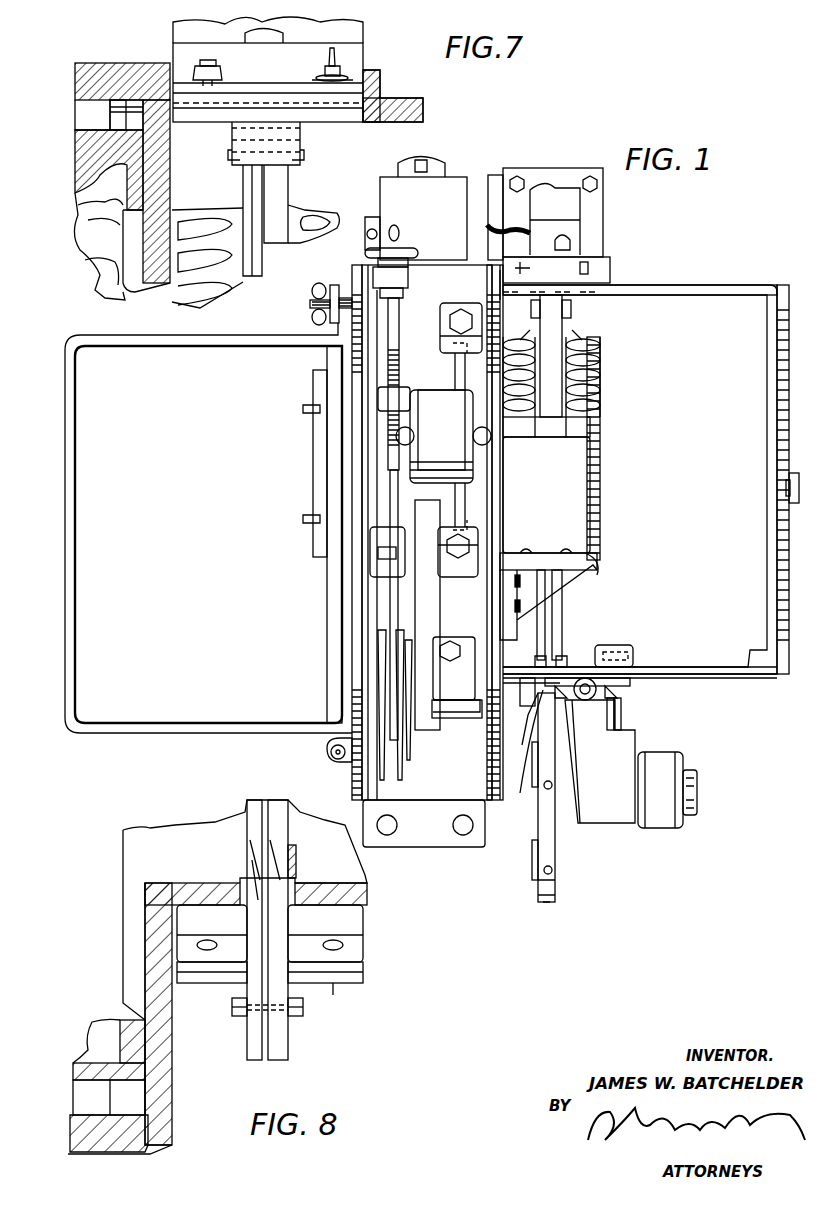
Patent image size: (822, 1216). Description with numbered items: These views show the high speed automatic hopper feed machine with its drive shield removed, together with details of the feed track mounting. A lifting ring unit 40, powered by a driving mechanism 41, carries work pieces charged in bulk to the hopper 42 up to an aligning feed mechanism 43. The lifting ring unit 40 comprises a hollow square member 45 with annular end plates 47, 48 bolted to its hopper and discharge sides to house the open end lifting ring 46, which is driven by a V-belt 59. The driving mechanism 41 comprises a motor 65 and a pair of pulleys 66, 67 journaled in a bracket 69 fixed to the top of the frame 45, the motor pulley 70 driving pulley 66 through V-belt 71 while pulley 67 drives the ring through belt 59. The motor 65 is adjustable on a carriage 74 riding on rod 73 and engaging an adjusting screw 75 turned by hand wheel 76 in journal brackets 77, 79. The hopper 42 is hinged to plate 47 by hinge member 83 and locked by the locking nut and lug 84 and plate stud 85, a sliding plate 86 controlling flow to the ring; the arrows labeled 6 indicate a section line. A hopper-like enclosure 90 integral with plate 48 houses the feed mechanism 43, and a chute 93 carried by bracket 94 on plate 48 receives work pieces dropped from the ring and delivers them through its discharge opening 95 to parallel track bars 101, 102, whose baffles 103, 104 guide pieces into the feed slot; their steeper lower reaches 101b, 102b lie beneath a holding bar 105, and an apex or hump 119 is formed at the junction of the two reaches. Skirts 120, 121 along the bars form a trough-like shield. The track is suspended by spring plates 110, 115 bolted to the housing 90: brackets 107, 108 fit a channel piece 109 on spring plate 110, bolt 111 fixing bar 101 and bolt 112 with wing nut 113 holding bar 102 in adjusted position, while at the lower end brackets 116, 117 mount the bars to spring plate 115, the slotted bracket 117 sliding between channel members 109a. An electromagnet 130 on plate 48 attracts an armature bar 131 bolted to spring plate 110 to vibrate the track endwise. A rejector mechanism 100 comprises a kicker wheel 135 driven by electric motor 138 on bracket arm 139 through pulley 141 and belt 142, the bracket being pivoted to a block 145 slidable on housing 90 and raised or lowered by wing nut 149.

In FIG. 1, the lifting ring unit 40 is at (417, 820).
In FIG. 1, the driving mechanism 41 is at (366, 588).
In FIG. 1, the hopper 42 is at (120, 735).
In FIG. 1, the aligning feed mechanism 43 is at (612, 347).
In FIG. 7, the hollow square member 45 is at (75, 80).
In FIG. 8, the hollow square member 45 is at (135, 1155).
In FIG. 7, the lifting ring 46 is at (75, 140).
In FIG. 8, the lifting ring 46 is at (73, 1070).
In FIG. 1, the annular end plate 47 is at (362, 690).
In FIG. 7, the annular end plate 48 is at (172, 300).
In FIG. 1, the annular end plate 48 is at (487, 750).
In FIG. 8, the annular end plate 48 is at (172, 1100).
In FIG. 1, the V-belt 59 is at (440, 620).
In FIG. 1, the section line 6- 6 is at (313, 445).
In FIG. 1, the motor 65 is at (478, 450).
In FIG. 1, the pulley 66 is at (384, 745).
In FIG. 1, the pulley 67 is at (442, 718).
In FIG. 1, the bracket 69 is at (450, 650).
In FIG. 1, the motor pulley 70 is at (338, 410).
In FIG. 1, the V-belt 71 is at (390, 605).
In FIG. 1, the rod 73 is at (455, 380).
In FIG. 1, the carriage 74 is at (402, 395).
In FIG. 1, the adjusting screw 75 is at (400, 322).
In FIG. 1, the hand wheel 76 is at (398, 237).
In FIG. 1, the journal bracket 77 is at (410, 272).
In FIG. 1, the journal bracket 79 is at (378, 530).
In FIG. 1, the hinge member 83 is at (326, 752).
In FIG. 1, the locking nut and lug 84 is at (334, 285).
In FIG. 1, the plate stud 85 is at (309, 305).
In FIG. 1, the plate 86 is at (313, 515).
In FIG. 7, the hopper-like enclosure 90 is at (423, 116).
In FIG. 1, the hopper-like enclosure 90 is at (720, 672).
In FIG. 8, the hopper-like enclosure 90 is at (367, 895).
In FIG. 1, the chute 93 is at (558, 515).
In FIG. 1, the bracket 94 is at (565, 575).
In FIG. 1, the discharge opening 95 is at (580, 425).
In FIG. 1, the rejector mechanism 100 is at (620, 835).
In FIG. 7, the track bar 101 is at (253, 168).
In FIG. 1, the track bar 101 is at (545, 613).
In FIG. 7, the track bar 102 is at (288, 176).
In FIG. 1, the track bar 102 is at (562, 622).
In FIG. 1, the baffle 103 is at (535, 340).
In FIG. 1, the baffle 104 is at (582, 340).
In FIG. 1, the holding bar 105 is at (556, 840).
In FIG. 7, the right angle bracket piece 107 is at (205, 118).
In FIG. 7, the right angle bracket piece 108 is at (318, 116).
In FIG. 7, the channel piece 109 is at (350, 100).
In FIG. 8, the channel members 109a is at (365, 978).
In FIG. 7, the spring plate 110 is at (300, 88).
In FIG. 7, the bolt 111 is at (205, 62).
In FIG. 7, the bolt 112 is at (338, 58).
In FIG. 7, the wing nut 113 is at (345, 72).
In FIG. 8, the spring plate 115 is at (363, 940).
In FIG. 8, the bracket 116 is at (238, 1018).
In FIG. 8, the bracket 117 is at (305, 1018).
In FIG. 1, the apex or hump 119 is at (545, 655).
In FIG. 8, the apex or hump 119 is at (247, 815).
In FIG. 8, the skirt 120 is at (247, 845).
In FIG. 8, the skirt 121 is at (290, 832).
In FIG. 8, the lower reach of track bar 101b is at (252, 1047).
In FIG. 8, the lower reach of track bar 102b is at (290, 1052).
In FIG. 1, the electromagnet 130 is at (600, 225).
In FIG. 1, the armature bar 131 is at (603, 257).
In FIG. 1, the kicker wheel 135 is at (520, 793).
In FIG. 1, the electric motor 138 is at (672, 760).
In FIG. 1, the arm 139 is at (625, 745).
In FIG. 1, the pulley 141 is at (626, 720).
In FIG. 1, the pulley belt 142 is at (618, 710).
In FIG. 1, the block 145 is at (610, 688).
In FIG. 1, the wing nut 149 is at (590, 680).